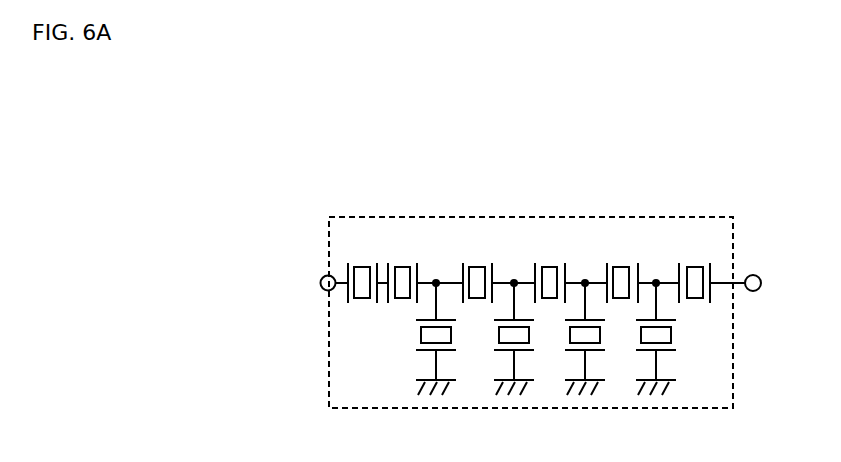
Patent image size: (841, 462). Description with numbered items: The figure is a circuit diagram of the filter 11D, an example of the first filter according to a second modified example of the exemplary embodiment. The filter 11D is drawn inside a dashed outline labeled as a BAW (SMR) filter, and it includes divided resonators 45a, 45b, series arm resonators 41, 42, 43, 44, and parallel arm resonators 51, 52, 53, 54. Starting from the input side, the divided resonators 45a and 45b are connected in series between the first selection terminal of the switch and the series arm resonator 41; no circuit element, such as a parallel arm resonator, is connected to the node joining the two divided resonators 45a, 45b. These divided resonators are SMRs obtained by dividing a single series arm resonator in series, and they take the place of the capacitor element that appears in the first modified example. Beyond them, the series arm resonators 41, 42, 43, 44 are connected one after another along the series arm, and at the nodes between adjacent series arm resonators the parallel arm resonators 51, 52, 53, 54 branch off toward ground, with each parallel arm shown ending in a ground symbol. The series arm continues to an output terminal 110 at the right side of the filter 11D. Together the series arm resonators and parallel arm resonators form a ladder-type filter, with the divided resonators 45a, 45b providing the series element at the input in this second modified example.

The filter 11D is at (648, 217).
The terminal 110 is at (757, 291).
The divided resonator 45a is at (357, 263).
The divided resonator 45b is at (403, 263).
The series arm resonator 41 is at (479, 263).
The series arm resonator 42 is at (552, 263).
The series arm resonator 43 is at (622, 263).
The series arm resonator 44 is at (690, 263).
The parallel arm resonator 51 is at (420, 335).
The parallel arm resonator 52 is at (498, 335).
The parallel arm resonator 53 is at (569, 338).
The parallel arm resonator 54 is at (640, 338).